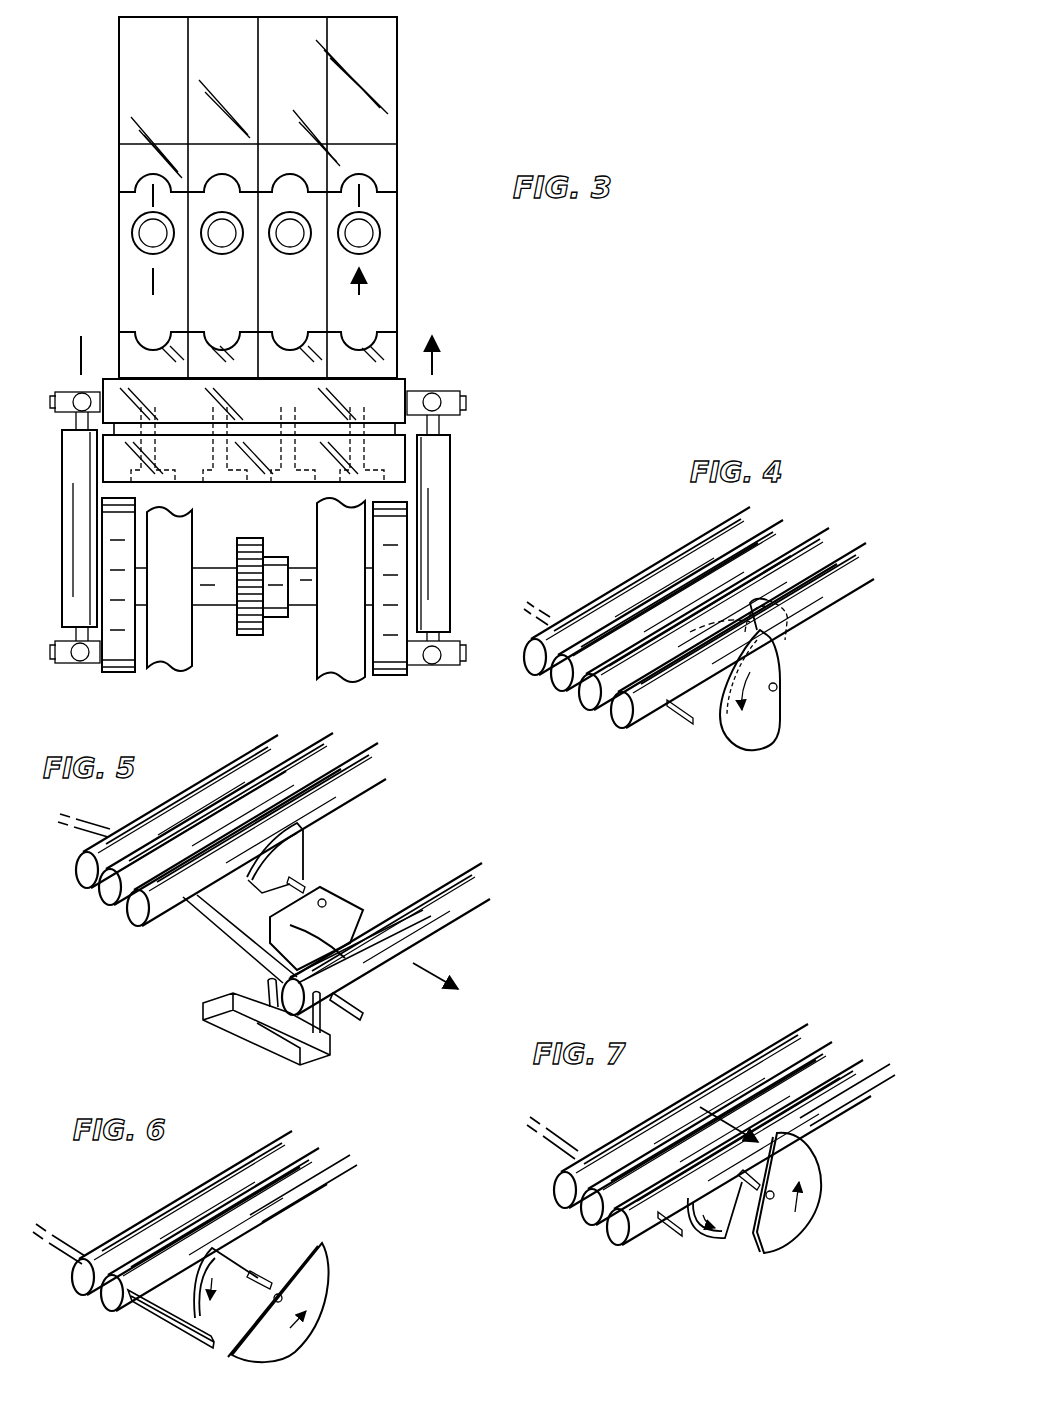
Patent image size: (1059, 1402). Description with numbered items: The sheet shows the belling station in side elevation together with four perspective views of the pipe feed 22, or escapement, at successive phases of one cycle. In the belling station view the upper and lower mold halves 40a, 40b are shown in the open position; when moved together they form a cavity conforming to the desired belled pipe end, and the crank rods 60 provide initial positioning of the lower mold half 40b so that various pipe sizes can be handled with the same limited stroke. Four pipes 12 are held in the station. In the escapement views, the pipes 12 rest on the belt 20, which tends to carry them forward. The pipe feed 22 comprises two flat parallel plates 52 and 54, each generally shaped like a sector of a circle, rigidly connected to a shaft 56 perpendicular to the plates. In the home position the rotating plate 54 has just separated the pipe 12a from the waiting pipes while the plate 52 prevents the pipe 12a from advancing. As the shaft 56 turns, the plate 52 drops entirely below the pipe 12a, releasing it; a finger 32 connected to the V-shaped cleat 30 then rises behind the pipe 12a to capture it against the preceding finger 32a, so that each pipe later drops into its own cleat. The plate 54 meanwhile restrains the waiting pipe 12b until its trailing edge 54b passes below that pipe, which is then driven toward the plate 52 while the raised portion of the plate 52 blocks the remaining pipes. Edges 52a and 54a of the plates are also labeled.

In FIG. 3, the pipes 12 is at (370, 248).
In FIG. 4, the pipe 12a is at (626, 714).
In FIG. 5, the pipe 12a is at (372, 978).
In FIG. 4, the waiting pipe 12b is at (587, 690).
In FIG. 5, the waiting pipe 12b is at (133, 915).
In FIG. 6, the waiting pipe 12b is at (106, 1300).
In FIG. 7, the waiting pipe 12b is at (614, 1230).
In FIG. 4, the belt 20 is at (552, 620).
In FIG. 5, the belt 20 is at (90, 833).
In FIG. 6, the belt 20 is at (75, 1246).
In FIG. 7, the belt 20 is at (560, 1138).
In FIG. 5, the pipe feed 22 is at (218, 948).
In FIG. 5, the V-shaped cleat 30 is at (210, 1030).
In FIG. 5, the finger 32 is at (266, 985).
In FIG. 5, the preceding finger 32a is at (322, 1026).
In FIG. 3, the upper mold half 40a is at (383, 167).
In FIG. 3, the lower mold half 40b is at (380, 357).
In FIG. 4, the plate 52 is at (774, 703).
In FIG. 5, the plate 52 is at (345, 906).
In FIG. 6, the plate 52 is at (322, 1274).
In FIG. 7, the plate 52 is at (800, 1206).
In FIG. 5, the rail 52a is at (352, 955).
In FIG. 4, the plate 54 is at (790, 640).
In FIG. 5, the plate 54 is at (290, 846).
In FIG. 6, the plate 54 is at (230, 1268).
In FIG. 7, the plate 54 is at (700, 1240).
In FIG. 4, the tab 54a is at (708, 630).
In FIG. 5, the tab 54a is at (270, 895).
In FIG. 6, the trailing edge 54b is at (215, 1252).
In FIG. 7, the trailing edge 54b is at (712, 1181).
In FIG. 4, the shaft 56 is at (777, 688).
In FIG. 5, the shaft 56 is at (306, 888).
In FIG. 6, the shaft 56 is at (283, 1298).
In FIG. 7, the shaft 56 is at (774, 1192).
In FIG. 3, the crank rods 60 is at (73, 543).